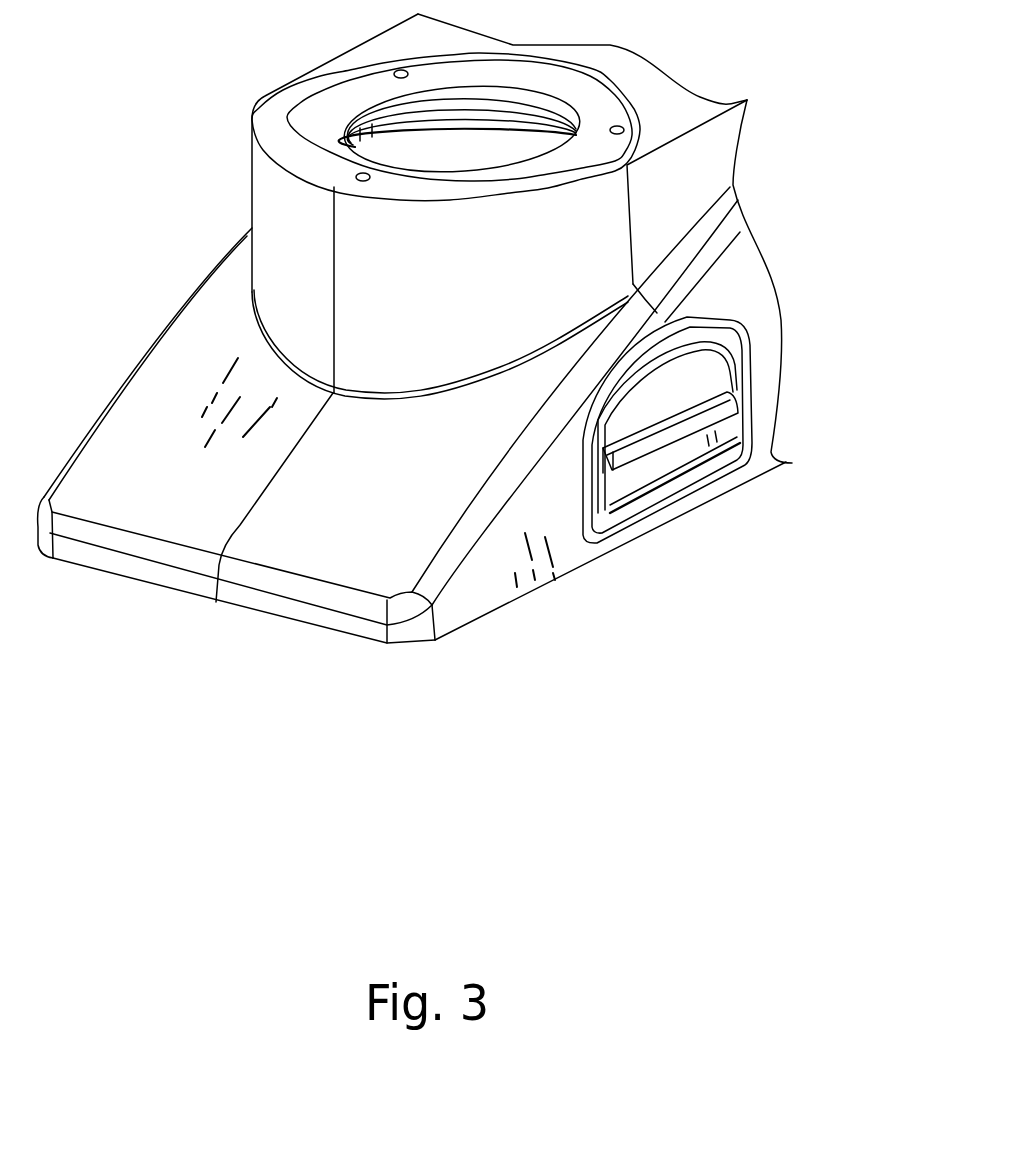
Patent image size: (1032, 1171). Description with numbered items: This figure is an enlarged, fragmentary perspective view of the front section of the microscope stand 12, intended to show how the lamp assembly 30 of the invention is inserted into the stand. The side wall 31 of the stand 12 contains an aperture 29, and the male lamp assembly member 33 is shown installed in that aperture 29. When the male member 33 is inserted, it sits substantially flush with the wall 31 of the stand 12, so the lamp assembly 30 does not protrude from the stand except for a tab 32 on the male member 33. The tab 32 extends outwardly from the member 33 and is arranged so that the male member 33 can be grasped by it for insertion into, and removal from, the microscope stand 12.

The microscope stand 12 is at (393, 510).
The aperture 29 is at (733, 320).
The lamp assembly 30 is at (610, 527).
The side wall 31 is at (747, 260).
The tab 32 is at (697, 422).
The male lamp assembly member 33 is at (715, 372).